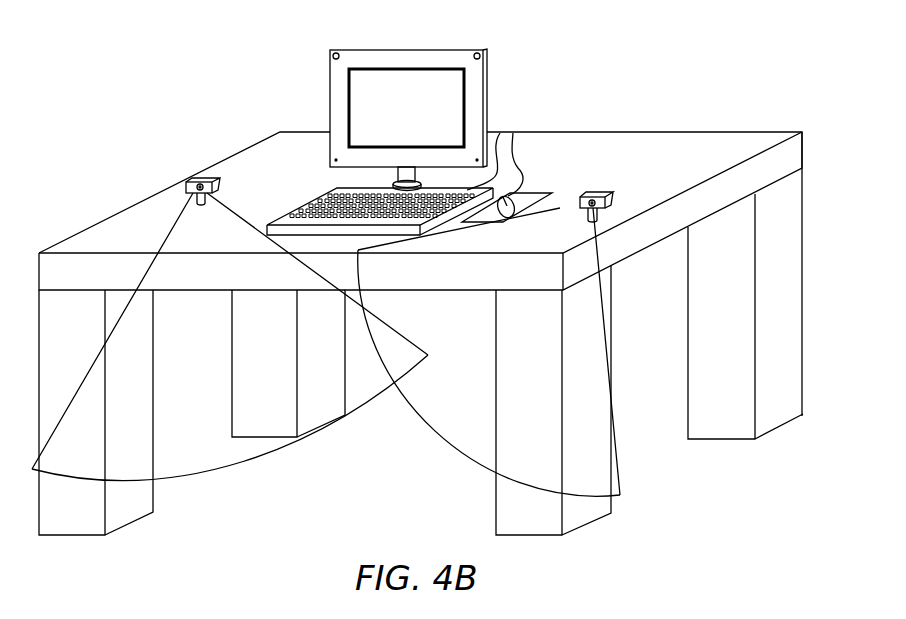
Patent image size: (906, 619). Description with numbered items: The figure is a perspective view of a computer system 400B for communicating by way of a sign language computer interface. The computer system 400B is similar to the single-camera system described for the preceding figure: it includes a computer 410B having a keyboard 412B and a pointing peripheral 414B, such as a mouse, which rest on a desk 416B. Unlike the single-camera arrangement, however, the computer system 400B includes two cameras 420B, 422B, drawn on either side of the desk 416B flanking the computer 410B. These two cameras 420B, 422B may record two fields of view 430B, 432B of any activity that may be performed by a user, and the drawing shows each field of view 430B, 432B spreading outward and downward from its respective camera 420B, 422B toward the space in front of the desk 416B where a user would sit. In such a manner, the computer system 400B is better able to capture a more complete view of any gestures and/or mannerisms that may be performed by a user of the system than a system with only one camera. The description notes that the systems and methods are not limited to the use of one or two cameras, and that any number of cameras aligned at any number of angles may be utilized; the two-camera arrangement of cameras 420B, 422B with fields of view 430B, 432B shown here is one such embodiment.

The computer system 400B is at (185, 65).
The computer 410B is at (495, 62).
The keyboard 412B is at (487, 182).
The pointing peripheral 414B is at (540, 190).
The desk 416B is at (157, 193).
The first camera 420B is at (207, 176).
The second camera 422B is at (604, 192).
The first field of view 430B is at (247, 467).
The second field of view 432B is at (435, 433).